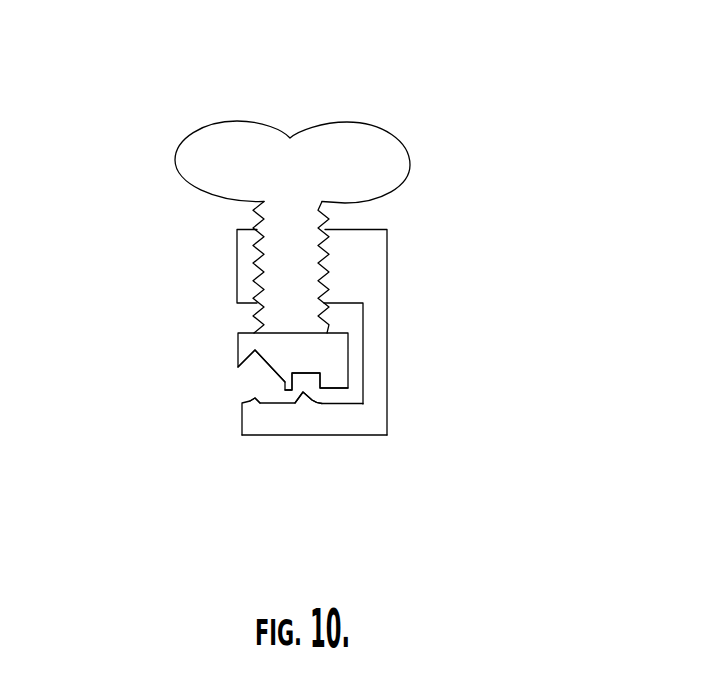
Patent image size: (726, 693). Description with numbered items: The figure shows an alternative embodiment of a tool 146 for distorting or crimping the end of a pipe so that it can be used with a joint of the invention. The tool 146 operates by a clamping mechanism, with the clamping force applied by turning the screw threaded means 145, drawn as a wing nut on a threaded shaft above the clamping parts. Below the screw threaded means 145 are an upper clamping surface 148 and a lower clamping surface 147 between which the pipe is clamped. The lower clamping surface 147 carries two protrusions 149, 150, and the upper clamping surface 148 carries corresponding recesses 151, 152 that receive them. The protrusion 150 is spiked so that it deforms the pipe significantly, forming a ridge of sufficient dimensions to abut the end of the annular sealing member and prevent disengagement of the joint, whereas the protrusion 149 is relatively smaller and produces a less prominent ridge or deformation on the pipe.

The screw threaded means 145 is at (394, 140).
The tool 146 is at (377, 333).
The lower clamping surface 147 is at (252, 433).
The upper clamping surface 148 is at (250, 347).
The protrusion 149 is at (252, 401).
The protrusion 150 is at (313, 395).
The recess 151 is at (312, 380).
The recess 152 is at (257, 360).